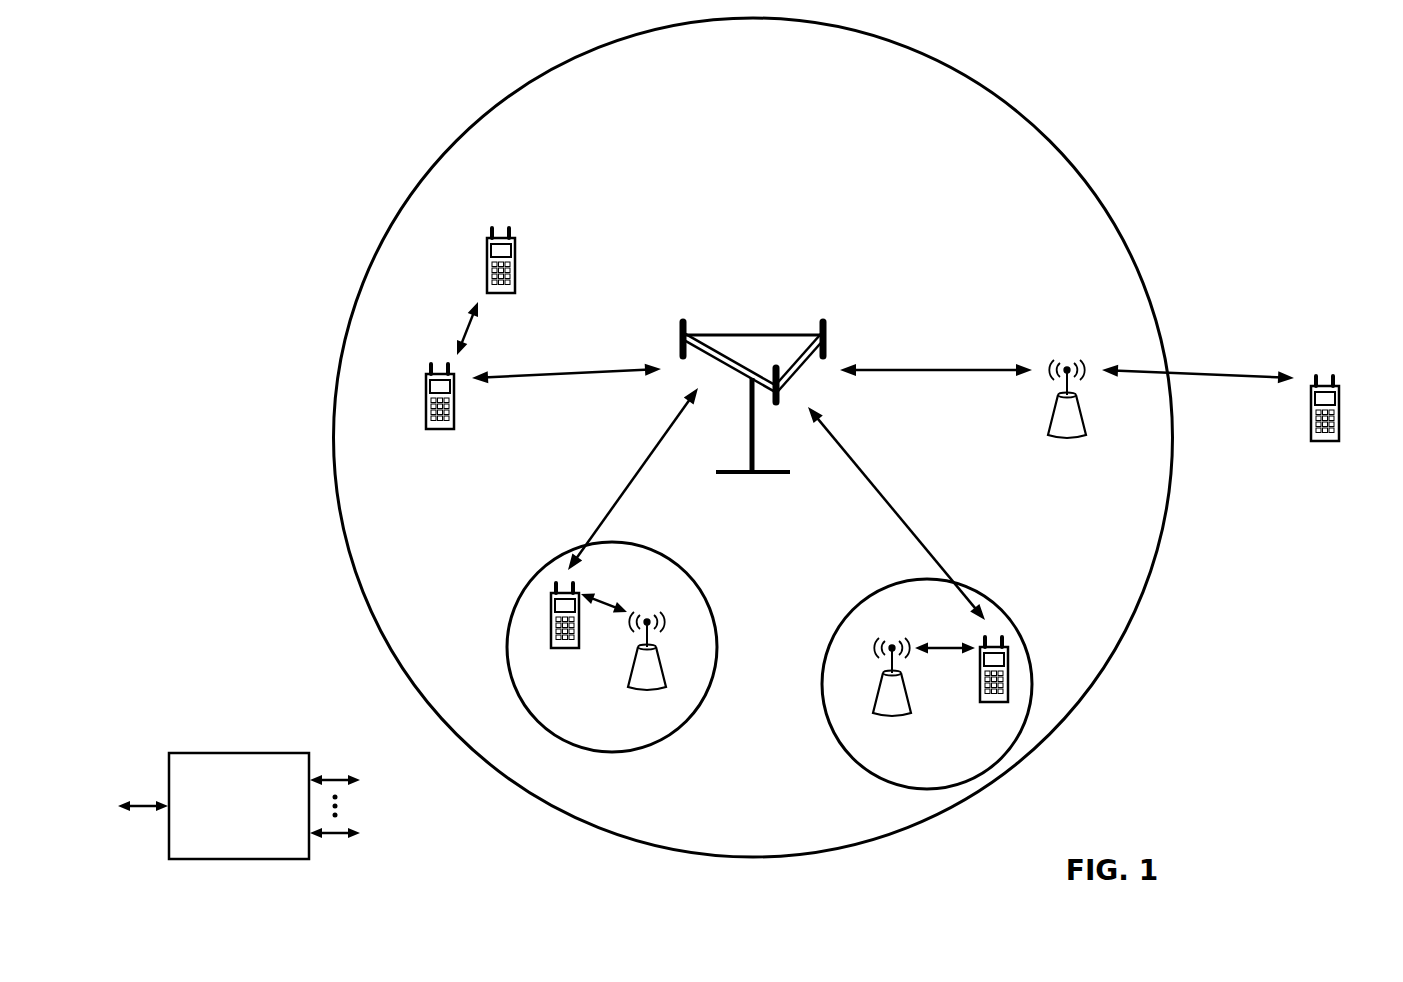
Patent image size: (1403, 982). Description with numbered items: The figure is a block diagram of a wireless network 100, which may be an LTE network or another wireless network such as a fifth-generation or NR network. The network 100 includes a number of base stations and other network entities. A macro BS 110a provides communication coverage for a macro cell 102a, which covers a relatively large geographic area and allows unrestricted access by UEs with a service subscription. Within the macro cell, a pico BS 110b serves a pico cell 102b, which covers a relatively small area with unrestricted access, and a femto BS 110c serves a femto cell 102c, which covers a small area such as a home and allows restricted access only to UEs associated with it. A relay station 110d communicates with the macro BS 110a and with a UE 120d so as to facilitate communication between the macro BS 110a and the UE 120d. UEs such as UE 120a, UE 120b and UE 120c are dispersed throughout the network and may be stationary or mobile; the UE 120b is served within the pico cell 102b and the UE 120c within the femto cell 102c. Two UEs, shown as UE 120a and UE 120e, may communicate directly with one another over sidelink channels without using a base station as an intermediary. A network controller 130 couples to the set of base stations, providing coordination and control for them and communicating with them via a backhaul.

The wireless network 100 is at (1218, 104).
The macro cell 102a is at (1033, 119).
The pico cell 102b is at (696, 574).
The femto cell 102c is at (849, 613).
The macro BS 110a is at (752, 333).
The pico BS 110b is at (663, 673).
The femto BS 110c is at (877, 698).
The relay station 110d is at (1068, 360).
The UE 120a is at (426, 383).
The UE 120b is at (551, 641).
The UE 120c is at (980, 696).
The UE 120d is at (1339, 395).
The UE 120e is at (487, 244).
The network controller 130 is at (233, 753).